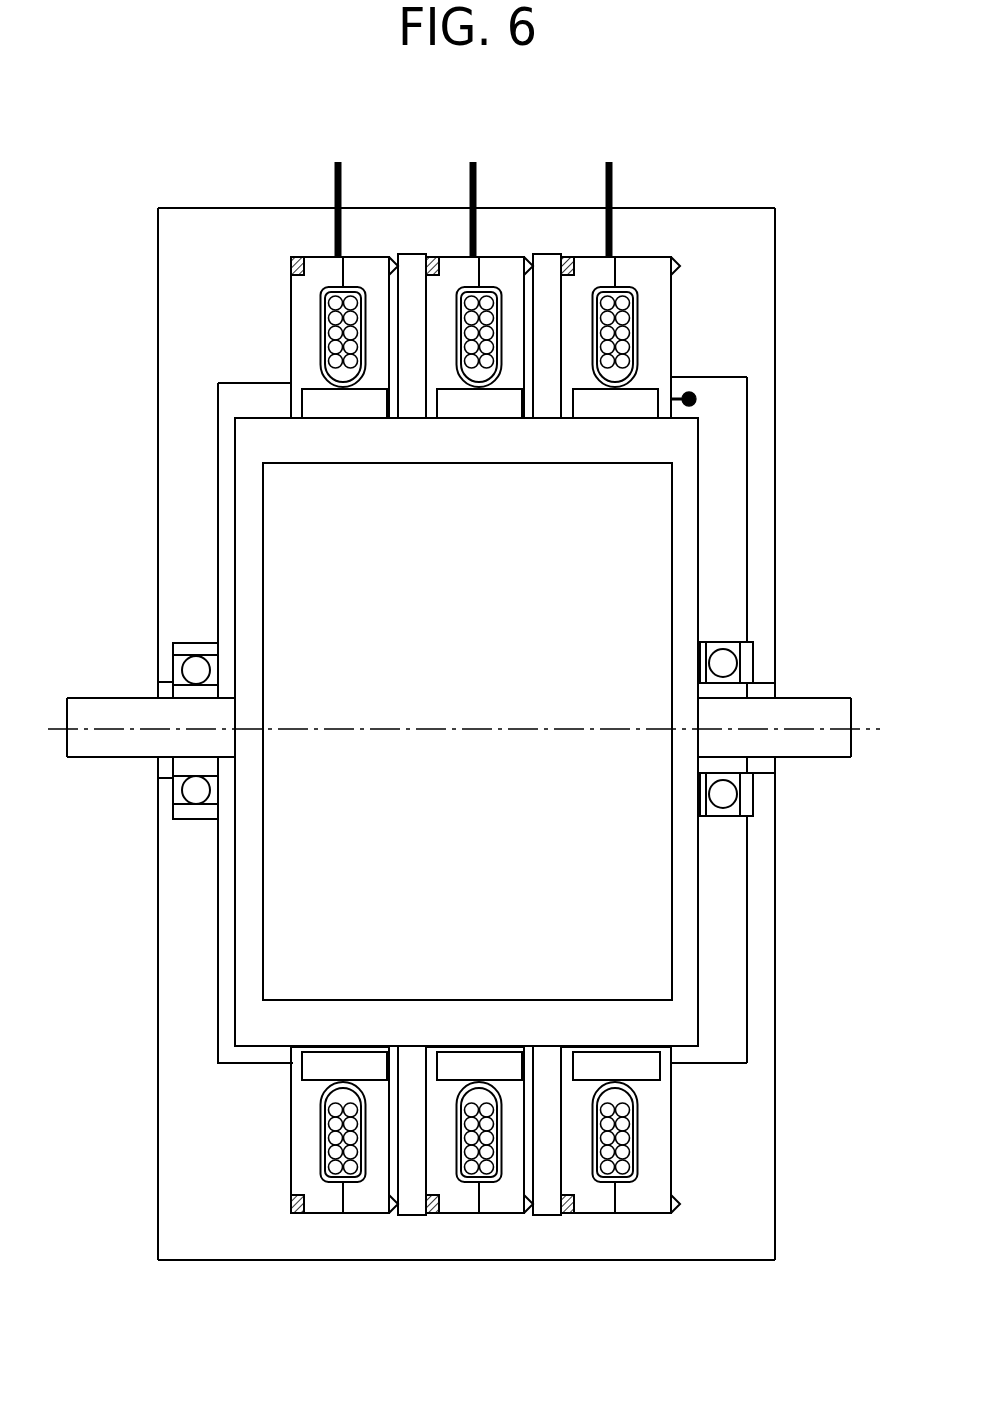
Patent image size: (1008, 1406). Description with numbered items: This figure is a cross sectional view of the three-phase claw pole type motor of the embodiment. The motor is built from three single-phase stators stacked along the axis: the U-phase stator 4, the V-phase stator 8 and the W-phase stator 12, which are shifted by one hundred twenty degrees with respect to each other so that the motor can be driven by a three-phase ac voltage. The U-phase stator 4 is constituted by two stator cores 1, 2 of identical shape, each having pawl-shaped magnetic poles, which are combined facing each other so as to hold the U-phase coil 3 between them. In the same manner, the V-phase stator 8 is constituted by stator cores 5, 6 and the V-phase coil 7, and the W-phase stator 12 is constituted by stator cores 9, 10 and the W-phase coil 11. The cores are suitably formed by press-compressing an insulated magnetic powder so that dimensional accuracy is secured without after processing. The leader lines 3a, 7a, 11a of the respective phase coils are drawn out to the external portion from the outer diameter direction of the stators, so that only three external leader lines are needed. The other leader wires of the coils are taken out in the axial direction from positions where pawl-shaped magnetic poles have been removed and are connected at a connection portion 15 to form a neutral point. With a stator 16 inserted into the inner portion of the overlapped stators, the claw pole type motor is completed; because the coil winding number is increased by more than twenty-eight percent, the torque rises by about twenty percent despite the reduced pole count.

The stator core 1 is at (643, 1193).
The stator core 2 is at (598, 1195).
The U-phase coil 3 is at (352, 1108).
The leader line 3a is at (613, 193).
The U-phase stator 4 is at (593, 257).
The stator core 5 is at (510, 1195).
The stator core 6 is at (460, 1193).
The V-phase coil 7 is at (490, 1136).
The leader line 7a is at (477, 186).
The V-phase stator 8 is at (453, 257).
The stator core 9 is at (373, 1198).
The stator core 10 is at (329, 1200).
The W-phase coil 11 is at (628, 1163).
The leader line 11a is at (332, 180).
The W-phase stator 12 is at (330, 257).
The connection portion 15 is at (689, 393).
The stator 16 is at (280, 438).